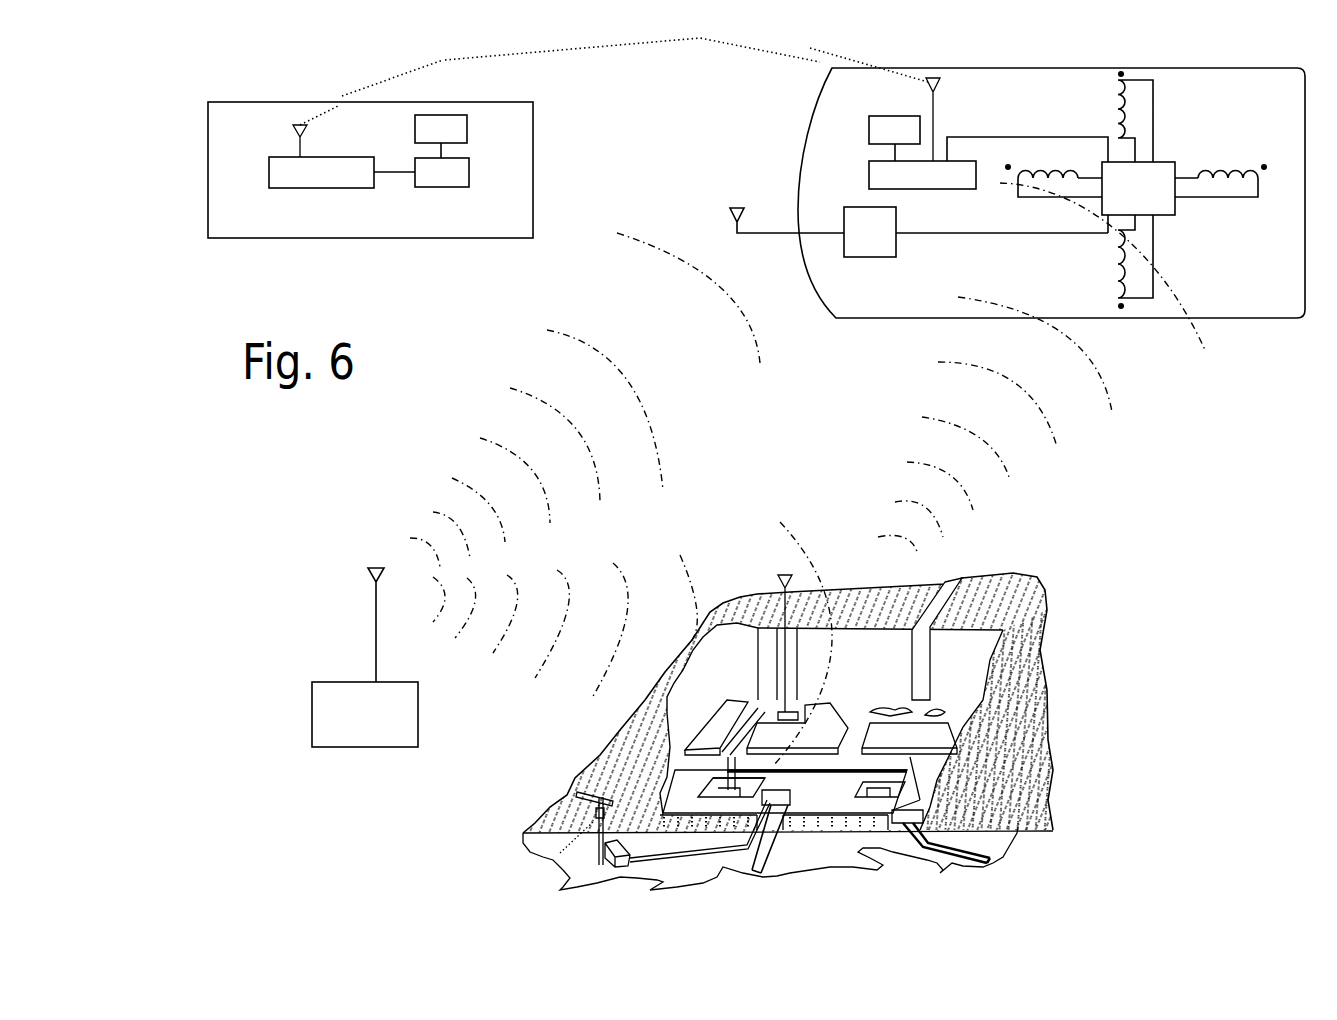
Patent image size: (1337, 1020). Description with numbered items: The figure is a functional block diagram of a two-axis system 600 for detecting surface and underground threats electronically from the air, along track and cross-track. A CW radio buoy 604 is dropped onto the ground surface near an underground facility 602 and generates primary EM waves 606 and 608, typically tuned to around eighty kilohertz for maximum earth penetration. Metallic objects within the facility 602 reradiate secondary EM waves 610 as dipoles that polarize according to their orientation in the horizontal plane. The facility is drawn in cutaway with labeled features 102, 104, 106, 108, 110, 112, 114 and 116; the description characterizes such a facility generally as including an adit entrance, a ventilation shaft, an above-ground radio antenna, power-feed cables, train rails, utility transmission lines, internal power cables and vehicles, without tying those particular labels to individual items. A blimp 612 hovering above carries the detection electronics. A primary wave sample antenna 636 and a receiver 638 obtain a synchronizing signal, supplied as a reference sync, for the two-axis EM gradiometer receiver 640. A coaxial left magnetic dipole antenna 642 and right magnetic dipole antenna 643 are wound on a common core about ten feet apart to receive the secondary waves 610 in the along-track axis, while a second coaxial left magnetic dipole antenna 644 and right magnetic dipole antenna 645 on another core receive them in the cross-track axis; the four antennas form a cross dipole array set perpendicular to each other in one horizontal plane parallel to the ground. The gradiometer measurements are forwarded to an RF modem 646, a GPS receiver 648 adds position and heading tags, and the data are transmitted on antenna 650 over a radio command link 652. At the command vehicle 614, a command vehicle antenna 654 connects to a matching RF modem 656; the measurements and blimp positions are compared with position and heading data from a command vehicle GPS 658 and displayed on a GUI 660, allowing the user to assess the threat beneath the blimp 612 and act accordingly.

The system 600 is at (278, 463).
The underground facility 602 is at (1047, 625).
The CW radio buoy 604 is at (312, 695).
The primary EM waves 606 is at (611, 652).
The primary EM waves 608 is at (564, 457).
The secondary EM waves 610 is at (1042, 368).
The blimp 612 is at (805, 137).
The command vehicle 614 is at (247, 102).
The primary wave sample antenna 636 is at (742, 213).
The receiver 638 is at (896, 257).
The two-axis EM gradiometer receiver 640 is at (1172, 162).
The left magnetic dipole antenna 642 is at (1053, 165).
The right magnetic dipole antenna 643 is at (1118, 248).
The left magnetic dipole antenna 644 is at (1252, 160).
The right magnetic dipole antenna 645 is at (1122, 115).
The RF modem 646 is at (869, 172).
The GPS receiver 648 is at (869, 128).
The antenna 650 is at (937, 85).
The radio command link 652 is at (446, 66).
The command vehicle antenna 654 is at (304, 132).
The RF modem 656 is at (269, 185).
The command vehicle GPS 658 is at (415, 128).
The GUI 660 is at (469, 175).
The conduit / pipe 102 is at (771, 827).
The ventilation shaft / pillar 104 is at (947, 582).
The facility antenna 106 is at (780, 582).
The pipeline 108 is at (718, 852).
The cable / pipe 110 is at (932, 862).
The sensor post 112 is at (577, 793).
The recessed bay 114 is at (711, 779).
The equipment on platform 116 is at (870, 708).